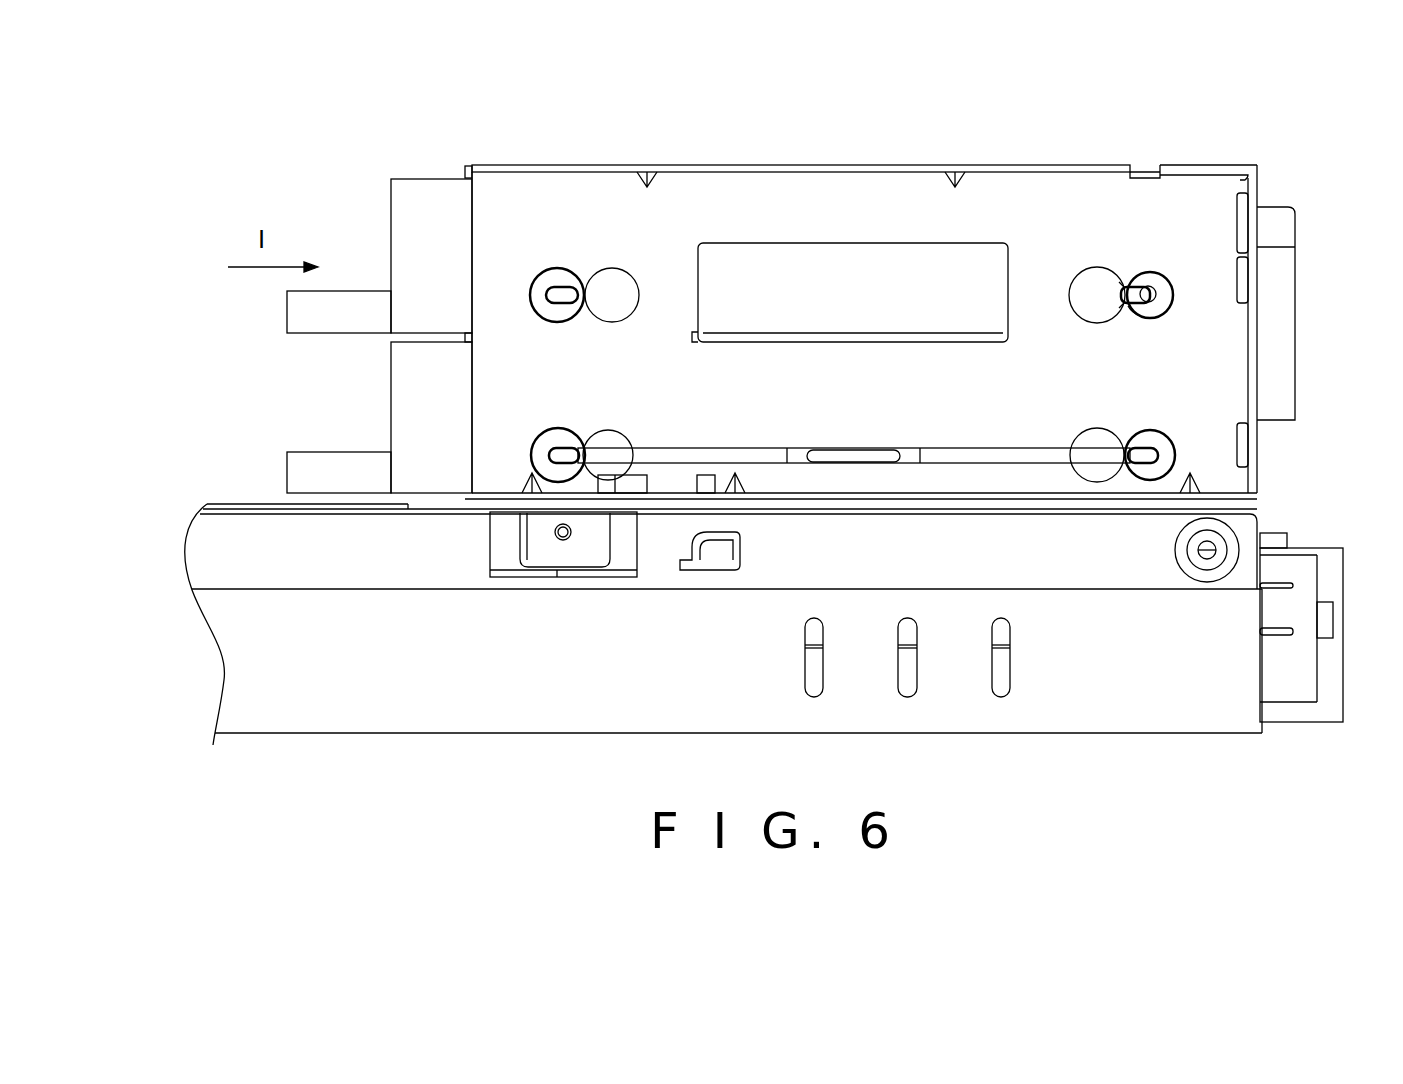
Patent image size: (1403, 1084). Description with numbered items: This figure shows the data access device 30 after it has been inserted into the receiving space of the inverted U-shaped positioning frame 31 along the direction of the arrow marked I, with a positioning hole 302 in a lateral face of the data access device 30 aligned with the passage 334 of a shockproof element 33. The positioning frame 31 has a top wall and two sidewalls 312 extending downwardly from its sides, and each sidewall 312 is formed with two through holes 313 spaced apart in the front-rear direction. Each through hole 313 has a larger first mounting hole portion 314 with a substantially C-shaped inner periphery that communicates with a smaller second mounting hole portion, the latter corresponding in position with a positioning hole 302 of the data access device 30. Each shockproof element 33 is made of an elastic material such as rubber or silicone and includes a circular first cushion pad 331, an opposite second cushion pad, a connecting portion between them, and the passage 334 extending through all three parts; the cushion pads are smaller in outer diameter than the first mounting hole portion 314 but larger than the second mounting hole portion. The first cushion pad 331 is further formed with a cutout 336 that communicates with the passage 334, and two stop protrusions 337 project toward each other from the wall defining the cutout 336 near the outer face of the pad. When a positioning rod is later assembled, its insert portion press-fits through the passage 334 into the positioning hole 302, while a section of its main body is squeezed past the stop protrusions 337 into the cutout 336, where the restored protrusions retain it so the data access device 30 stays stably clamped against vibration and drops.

The data access device 30 is at (411, 244).
The positioning frame 31 is at (706, 150).
The sidewall 312 is at (990, 212).
The through hole 313 is at (1112, 338).
The first mounting hole portion 314 is at (1075, 278).
The shockproof element 33 is at (1139, 250).
The first cushion pad 331 is at (1147, 280).
The positioning hole 302 is at (1175, 293).
The passage 334 is at (1157, 307).
The cutout 336 is at (1115, 302).
The stop protrusion 337 is at (1130, 307).